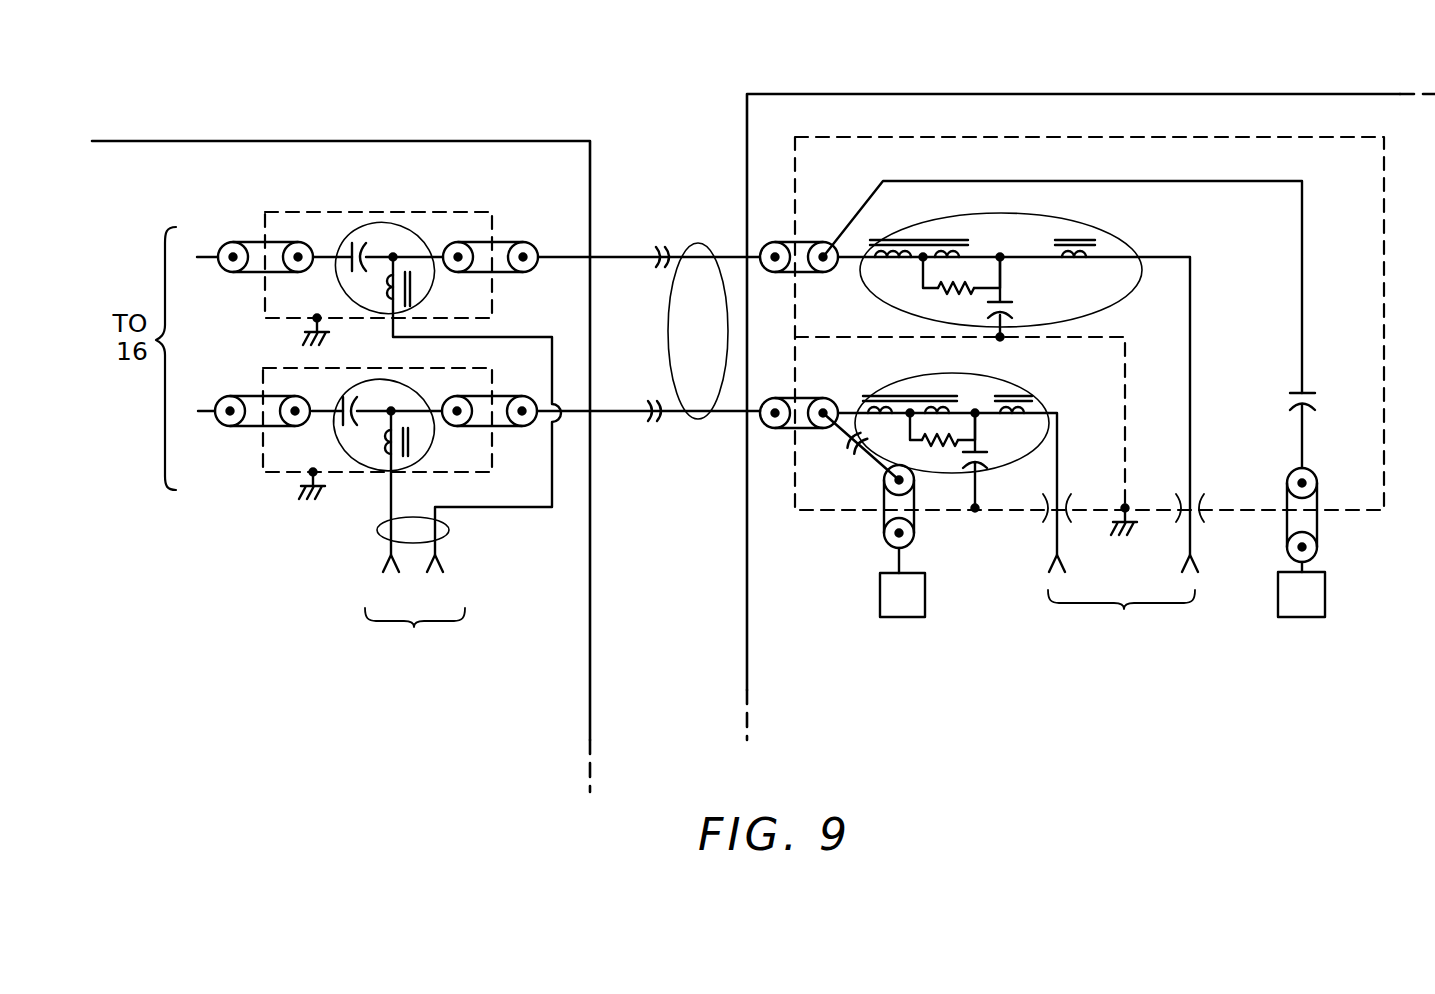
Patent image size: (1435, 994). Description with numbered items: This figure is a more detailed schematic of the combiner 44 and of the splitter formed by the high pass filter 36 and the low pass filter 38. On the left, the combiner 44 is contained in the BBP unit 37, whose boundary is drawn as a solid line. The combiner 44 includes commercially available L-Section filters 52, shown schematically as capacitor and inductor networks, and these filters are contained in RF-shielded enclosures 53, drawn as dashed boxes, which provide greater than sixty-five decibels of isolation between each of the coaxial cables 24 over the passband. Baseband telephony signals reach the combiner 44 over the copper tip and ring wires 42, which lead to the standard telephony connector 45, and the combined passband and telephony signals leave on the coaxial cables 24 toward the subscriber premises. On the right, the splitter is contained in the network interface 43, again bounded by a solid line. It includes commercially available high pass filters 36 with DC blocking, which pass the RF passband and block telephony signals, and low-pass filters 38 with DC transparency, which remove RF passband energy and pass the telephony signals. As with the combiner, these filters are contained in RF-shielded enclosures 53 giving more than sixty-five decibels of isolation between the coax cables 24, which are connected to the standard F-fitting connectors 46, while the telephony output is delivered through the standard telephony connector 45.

The coaxial cable 24 is at (240, 241).
The high pass filter 36 is at (848, 450).
The BBP unit 37 is at (557, 140).
The low pass filter 38 is at (1088, 233).
The tip and ring wires 42 is at (445, 527).
The network interface 43 is at (812, 93).
The combiner 44 is at (263, 368).
The RJ-11 telephony connector 45 is at (784, 576).
The F-fitting connector 46 is at (1102, 594).
The L-Section filter 52 is at (405, 232).
The RF-shielded enclosure 53 is at (318, 211).